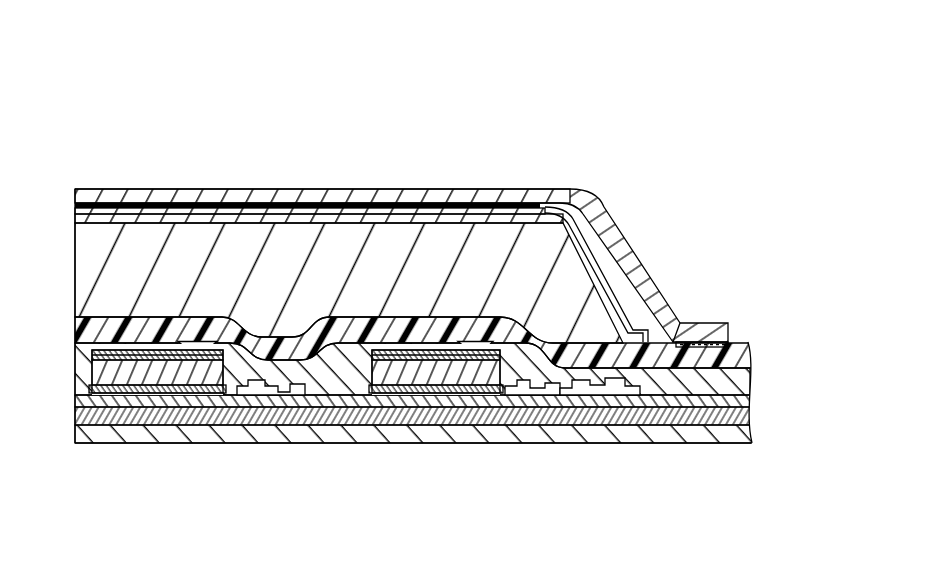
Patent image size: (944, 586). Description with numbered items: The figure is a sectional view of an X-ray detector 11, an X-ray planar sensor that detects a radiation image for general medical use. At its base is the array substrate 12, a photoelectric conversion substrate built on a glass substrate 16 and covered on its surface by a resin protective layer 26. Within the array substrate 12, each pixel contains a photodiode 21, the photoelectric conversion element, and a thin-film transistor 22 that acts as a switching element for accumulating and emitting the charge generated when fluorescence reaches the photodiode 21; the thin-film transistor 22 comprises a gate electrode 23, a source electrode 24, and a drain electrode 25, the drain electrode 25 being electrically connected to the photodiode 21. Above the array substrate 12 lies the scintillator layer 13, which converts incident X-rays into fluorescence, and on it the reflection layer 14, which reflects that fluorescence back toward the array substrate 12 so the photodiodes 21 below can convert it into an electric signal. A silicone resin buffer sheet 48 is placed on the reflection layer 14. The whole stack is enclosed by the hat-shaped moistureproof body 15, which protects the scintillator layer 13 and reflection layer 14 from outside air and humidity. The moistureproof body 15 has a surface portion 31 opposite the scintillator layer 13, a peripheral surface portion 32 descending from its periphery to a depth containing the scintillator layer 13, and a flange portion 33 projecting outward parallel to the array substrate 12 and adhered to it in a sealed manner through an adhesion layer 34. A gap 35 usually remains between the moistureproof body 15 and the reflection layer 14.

The X-ray detector 11 is at (106, 134).
The array substrate 12 is at (63, 317).
The scintillator layer 13 is at (93, 270).
The reflection layer 14 is at (324, 218).
The hat-shaped moistureproof body 15 is at (484, 172).
The glass substrate 16 is at (108, 426).
The photodiode 21 is at (165, 372).
The thin-film transistor 22 is at (283, 386).
The gate electrode 23 is at (590, 410).
The source electrode 24 is at (610, 408).
The drain electrode 25 is at (577, 409).
The resin protective layer 26 is at (752, 352).
The surface portion 31 is at (403, 196).
The peripheral surface portion 32 is at (623, 257).
The flange portion 33 is at (698, 323).
The adhesion layer 34 is at (733, 342).
The gap 35 is at (607, 250).
The silicone resin buffer sheet 48 is at (242, 205).